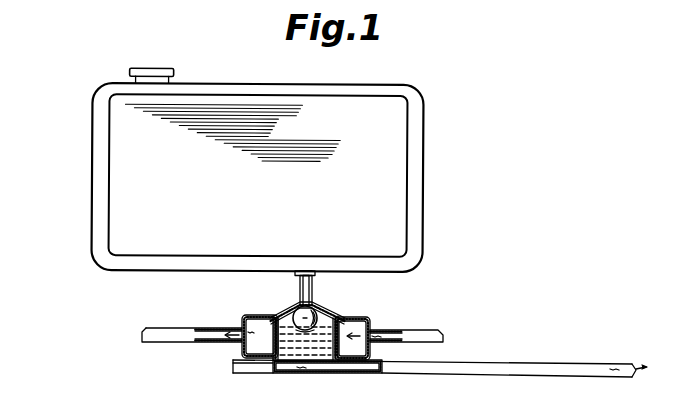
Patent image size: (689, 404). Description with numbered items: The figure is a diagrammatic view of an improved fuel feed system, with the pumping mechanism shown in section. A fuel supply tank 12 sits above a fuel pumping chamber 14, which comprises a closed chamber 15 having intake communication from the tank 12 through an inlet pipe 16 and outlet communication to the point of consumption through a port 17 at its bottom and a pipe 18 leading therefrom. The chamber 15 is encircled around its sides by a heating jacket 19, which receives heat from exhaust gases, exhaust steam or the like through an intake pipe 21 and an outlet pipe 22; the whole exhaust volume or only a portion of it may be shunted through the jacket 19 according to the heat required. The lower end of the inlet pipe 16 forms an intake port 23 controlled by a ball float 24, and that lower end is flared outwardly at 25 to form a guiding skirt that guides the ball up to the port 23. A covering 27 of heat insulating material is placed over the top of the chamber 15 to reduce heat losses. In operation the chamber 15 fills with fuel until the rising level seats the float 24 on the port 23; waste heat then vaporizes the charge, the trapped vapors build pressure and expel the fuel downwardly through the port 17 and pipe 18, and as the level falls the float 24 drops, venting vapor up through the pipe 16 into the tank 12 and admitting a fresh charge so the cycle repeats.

The fuel supply tank 12 is at (88, 196).
The fuel pumping chamber 14 is at (252, 289).
The closed chamber 15 is at (338, 318).
The inlet pipe 16 is at (313, 283).
The port 17 is at (318, 343).
The pipe 18 is at (397, 365).
The heating jacket 19 is at (250, 354).
The intake pipe 21 is at (420, 333).
The outlet pipe 22 is at (168, 334).
The intake port 23 is at (301, 307).
The ball float 24 is at (303, 331).
The guiding skirt 25 is at (274, 313).
The covering of heat insulating material 27 is at (328, 309).